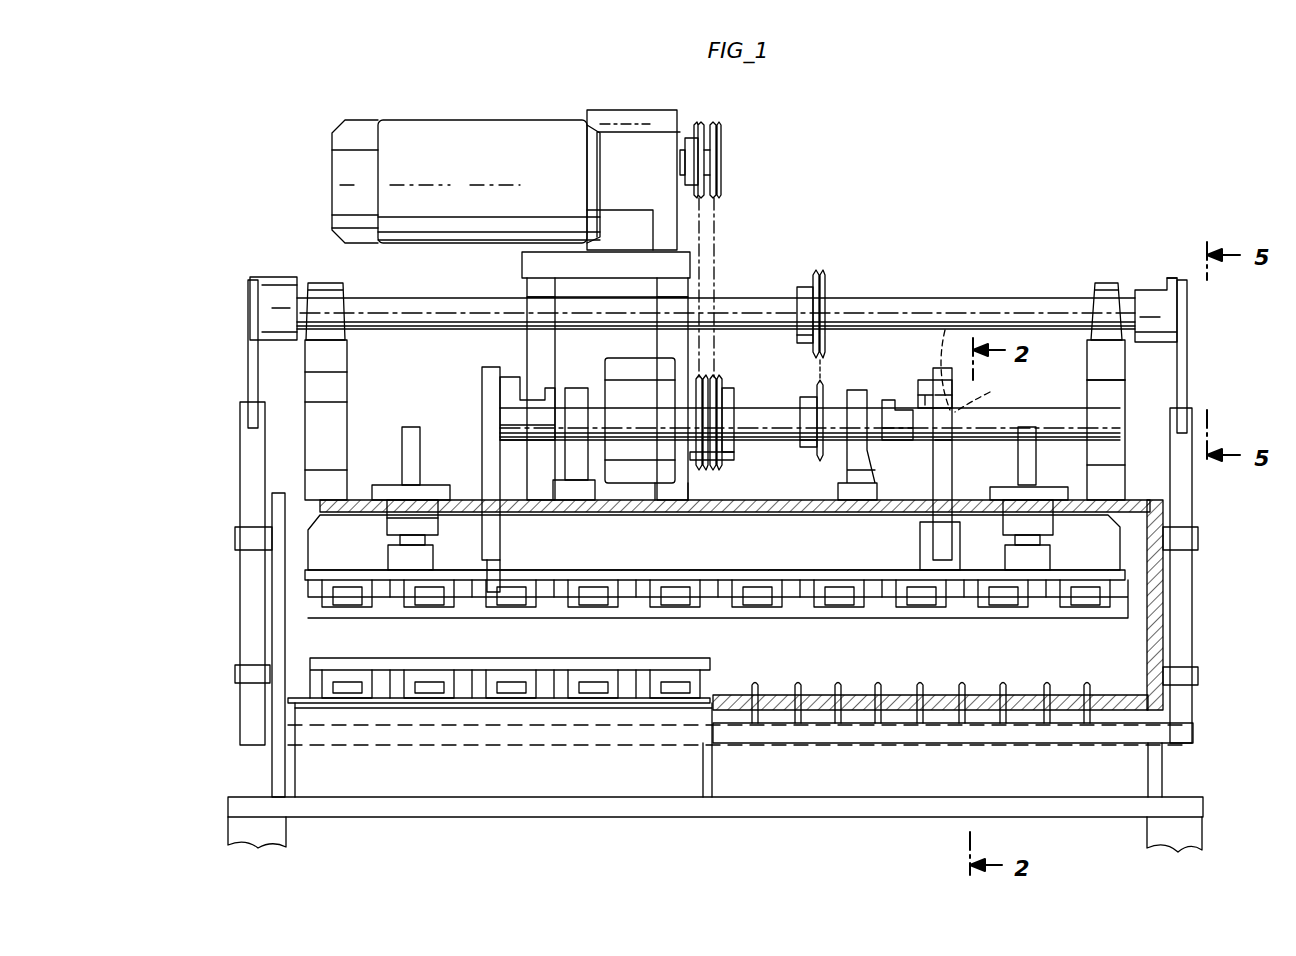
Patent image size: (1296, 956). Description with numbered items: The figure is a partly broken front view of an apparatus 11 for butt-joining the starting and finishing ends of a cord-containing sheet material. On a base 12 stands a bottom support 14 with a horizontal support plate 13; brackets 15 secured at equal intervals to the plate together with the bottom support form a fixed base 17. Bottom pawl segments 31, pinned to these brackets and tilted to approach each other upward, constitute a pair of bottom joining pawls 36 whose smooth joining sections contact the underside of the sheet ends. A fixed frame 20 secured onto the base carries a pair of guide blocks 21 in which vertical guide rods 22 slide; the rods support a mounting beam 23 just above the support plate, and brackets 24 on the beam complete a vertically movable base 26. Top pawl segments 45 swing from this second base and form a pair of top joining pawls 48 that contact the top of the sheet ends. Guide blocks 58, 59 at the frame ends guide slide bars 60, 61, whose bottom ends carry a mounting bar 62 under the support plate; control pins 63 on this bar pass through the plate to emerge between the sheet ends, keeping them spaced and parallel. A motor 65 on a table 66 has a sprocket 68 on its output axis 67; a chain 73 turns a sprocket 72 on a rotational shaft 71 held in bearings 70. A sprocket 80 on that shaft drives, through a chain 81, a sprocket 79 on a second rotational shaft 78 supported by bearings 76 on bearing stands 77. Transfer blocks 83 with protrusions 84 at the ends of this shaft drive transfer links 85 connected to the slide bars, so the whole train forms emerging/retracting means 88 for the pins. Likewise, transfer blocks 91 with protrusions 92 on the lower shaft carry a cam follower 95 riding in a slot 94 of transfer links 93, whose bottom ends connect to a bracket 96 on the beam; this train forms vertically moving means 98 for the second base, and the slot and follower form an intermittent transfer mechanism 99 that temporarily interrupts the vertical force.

The apparatus 11 is at (912, 250).
The base 12 is at (855, 808).
The support plate 13 is at (1116, 697).
The bottom support 14 is at (645, 790).
The brackets 15 is at (420, 685).
The fixed base 17 is at (388, 776).
The fixed frame 20 is at (275, 576).
The guide blocks 21 is at (435, 490).
The guide rod 22 is at (410, 435).
The mounting beam 23 is at (658, 572).
The brackets 24 is at (585, 580).
The vertically movable base 26 is at (735, 570).
The bottom pawl segments 31 is at (690, 670).
The bottom joining pawl 36 is at (312, 658).
The top pawl segments 45 is at (935, 620).
The top joining pawl 48 is at (838, 620).
The guide blocks 58 is at (238, 542).
The guide blocks 59 is at (1192, 712).
The slide bar 60 is at (242, 473).
The slide bar 61 is at (1192, 610).
The mounting bar 62 is at (1015, 740).
The control pins 63 is at (885, 722).
The motor 65 is at (507, 140).
The table 66 is at (530, 266).
The output axis 67 is at (683, 162).
The sprocket 68 is at (720, 145).
The bearings 70 is at (862, 400).
The rotational shaft 71 is at (765, 410).
The sprocket 72 is at (720, 455).
The chain 73 is at (718, 235).
The bearings 76 is at (332, 283).
The bearing stand 77 is at (1092, 374).
The rotational shaft 78 is at (1025, 302).
The sprocket 79 is at (805, 290).
The sprocket 80 is at (805, 456).
The chain 81 is at (822, 375).
The transfer block 83 is at (283, 297).
The protrusion 84 is at (1175, 280).
The transfer links 85 is at (250, 372).
The emerging/retracting means 88 is at (1078, 248).
The transfer blocks 91 is at (520, 390).
The protrusion 92 is at (926, 380).
The transfer links 93 is at (945, 442).
The slot 94 is at (984, 394).
The cam follower 95 is at (948, 355).
The bracket 96 is at (918, 532).
The vertically moving means 98 is at (728, 352).
The intermittent transfer mechanism 99 is at (978, 420).